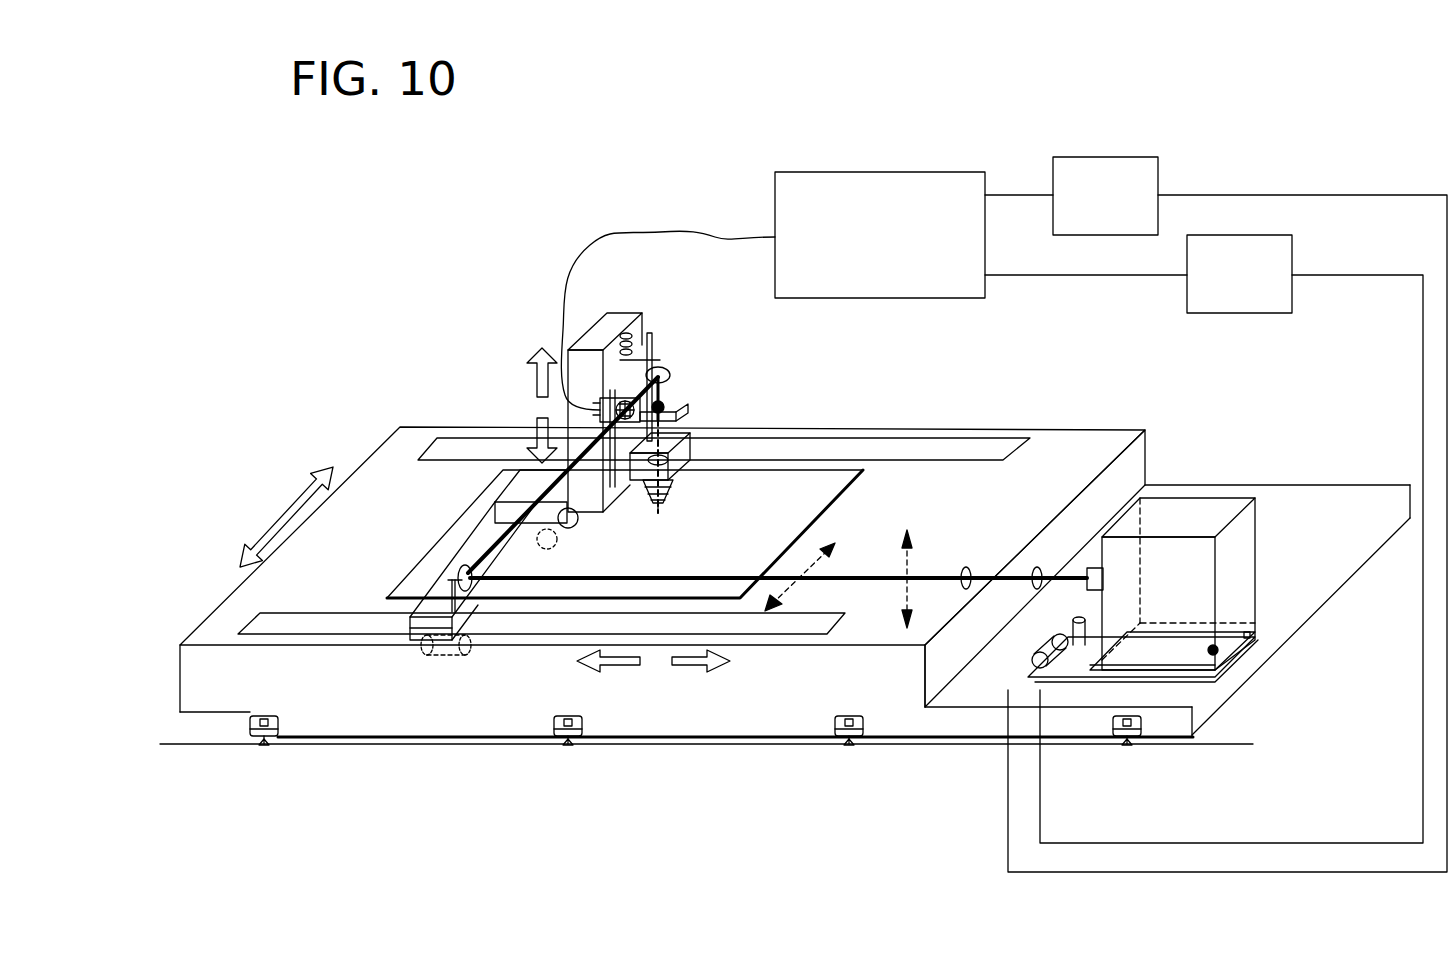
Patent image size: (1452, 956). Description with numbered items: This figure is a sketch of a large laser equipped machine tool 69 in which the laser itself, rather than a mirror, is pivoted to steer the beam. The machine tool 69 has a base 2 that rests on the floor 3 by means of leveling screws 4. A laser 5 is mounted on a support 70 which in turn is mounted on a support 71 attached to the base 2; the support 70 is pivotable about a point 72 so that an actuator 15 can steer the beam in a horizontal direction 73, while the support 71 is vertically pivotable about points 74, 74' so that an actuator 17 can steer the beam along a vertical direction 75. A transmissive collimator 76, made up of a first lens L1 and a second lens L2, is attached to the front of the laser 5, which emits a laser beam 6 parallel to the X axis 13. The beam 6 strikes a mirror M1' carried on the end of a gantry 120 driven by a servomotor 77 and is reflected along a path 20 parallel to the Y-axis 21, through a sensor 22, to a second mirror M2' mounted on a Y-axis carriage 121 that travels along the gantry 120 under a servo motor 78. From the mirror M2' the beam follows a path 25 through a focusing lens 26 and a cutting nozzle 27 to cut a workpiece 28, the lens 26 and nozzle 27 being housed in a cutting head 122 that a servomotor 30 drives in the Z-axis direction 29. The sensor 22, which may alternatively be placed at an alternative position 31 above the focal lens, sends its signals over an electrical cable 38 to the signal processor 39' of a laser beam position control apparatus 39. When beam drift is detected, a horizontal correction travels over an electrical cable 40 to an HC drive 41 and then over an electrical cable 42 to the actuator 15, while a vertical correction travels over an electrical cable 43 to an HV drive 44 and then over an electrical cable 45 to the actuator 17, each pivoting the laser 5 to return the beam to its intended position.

The base 2 is at (302, 695).
The floor 3 is at (958, 788).
The leveling screws 4 is at (250, 731).
The laser 5 is at (1170, 573).
The laser beam 6 is at (855, 578).
The X axis 13 is at (688, 668).
The actuator 15 is at (1036, 648).
The actuator 17 is at (1073, 622).
The path 20 is at (492, 532).
The Y-axis 21 is at (255, 545).
The sensor 22 is at (612, 400).
The path 25 is at (664, 392).
The focusing lens 26 is at (690, 440).
The cutting nozzle 27 is at (672, 503).
The workpiece 28 is at (716, 562).
The Z-axis direction 29 is at (535, 373).
The servomotor 30 is at (638, 332).
The alternative position 31 is at (690, 407).
The electrical cable 38 is at (563, 300).
The laser beam position control apparatus 39 is at (769, 216).
The signal processor 39' is at (668, 300).
The electrical cable 40 is at (1020, 193).
The HC drive 41 is at (1158, 167).
The electrical cable 42 is at (1305, 193).
The electrical cable 43 is at (1085, 277).
The HV drive 44 is at (1292, 300).
The electrical cable 45 is at (1360, 273).
The laser equipped machine tool 69 is at (338, 436).
The support 70 is at (1180, 680).
The support 71 is at (1075, 683).
The point 72 is at (1216, 644).
The horizontal direction 73 is at (788, 592).
The point 74 is at (1206, 661).
The point 74' is at (1302, 626).
The vertical direction 75 is at (912, 578).
The transmissive collimator 76 is at (1016, 532).
The servomotor 77 is at (433, 655).
The servo motor 78 is at (572, 530).
The gantry 120 is at (447, 593).
The Y-axis carriage 121 is at (624, 318).
The cutting head 122 is at (641, 465).
The first lens L1 is at (1040, 568).
The second lens L2 is at (968, 568).
The mirror M1' is at (497, 649).
The second mirror M2' is at (716, 328).